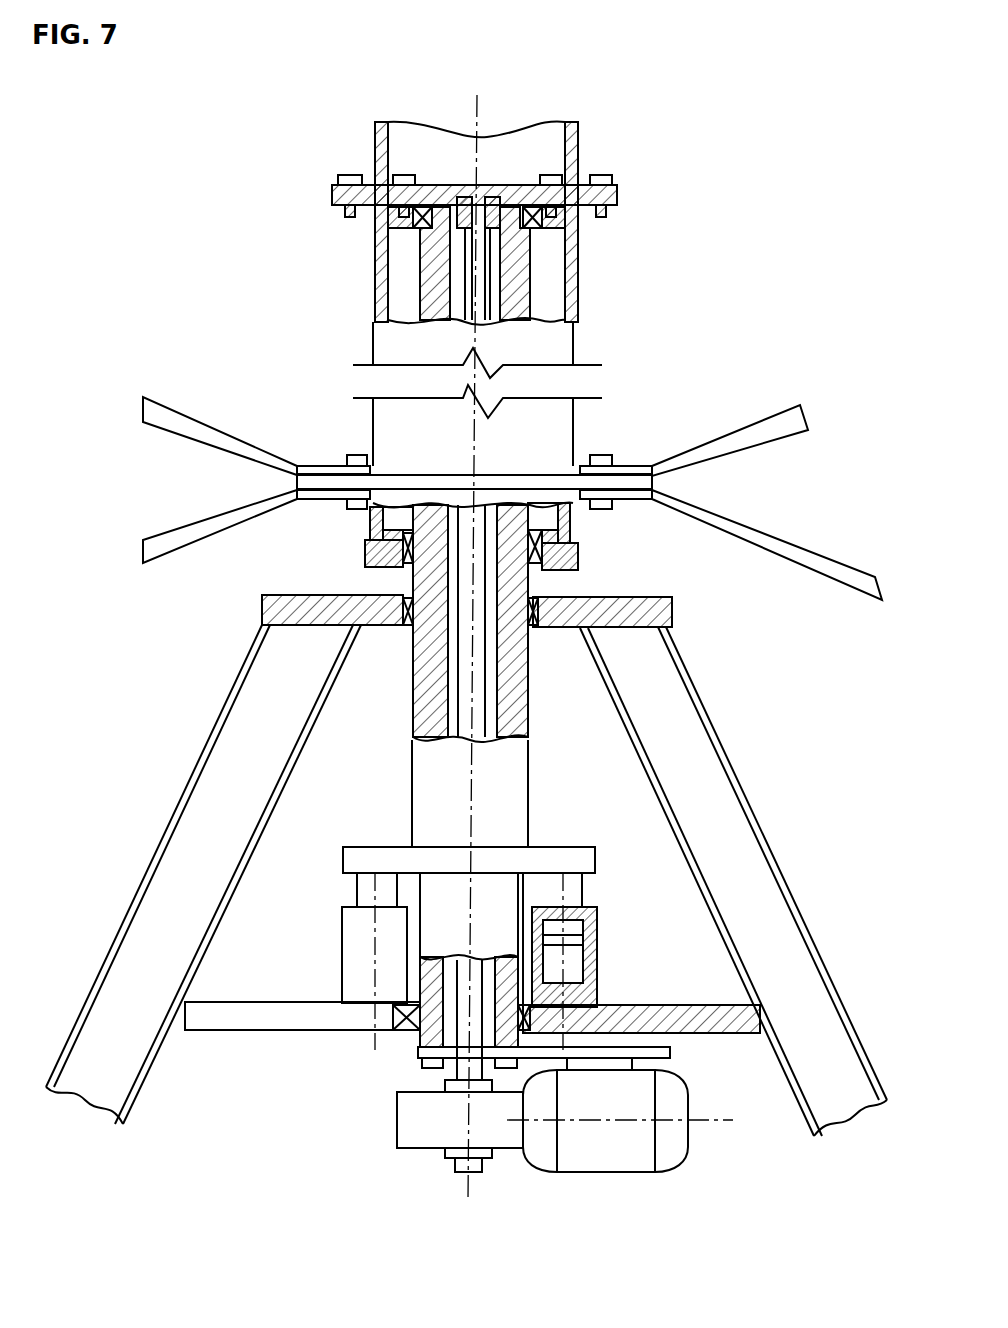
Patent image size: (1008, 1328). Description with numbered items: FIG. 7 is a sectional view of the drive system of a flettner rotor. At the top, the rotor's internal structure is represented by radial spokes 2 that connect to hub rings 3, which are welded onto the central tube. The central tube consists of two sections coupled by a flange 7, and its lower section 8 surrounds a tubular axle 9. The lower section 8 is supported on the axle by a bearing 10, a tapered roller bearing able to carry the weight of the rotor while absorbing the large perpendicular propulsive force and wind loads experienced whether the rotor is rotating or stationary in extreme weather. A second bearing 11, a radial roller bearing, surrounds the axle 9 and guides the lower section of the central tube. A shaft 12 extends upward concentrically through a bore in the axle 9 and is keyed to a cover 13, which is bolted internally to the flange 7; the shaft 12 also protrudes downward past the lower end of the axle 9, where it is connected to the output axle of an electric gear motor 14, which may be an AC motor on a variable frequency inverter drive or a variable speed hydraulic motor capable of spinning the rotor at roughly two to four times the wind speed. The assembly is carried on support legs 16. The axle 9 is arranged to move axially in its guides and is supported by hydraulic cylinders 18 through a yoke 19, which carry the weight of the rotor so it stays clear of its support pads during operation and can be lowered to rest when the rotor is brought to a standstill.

The spokes 2 is at (770, 427).
The hub rings 3 is at (297, 485).
The flange 7 is at (617, 192).
The lower section 8 is at (575, 437).
The tubular axle 9 is at (517, 284).
The bearing 10 is at (417, 210).
The second bearing 11 is at (540, 572).
The shaft 12 is at (470, 283).
The cover 13 is at (518, 192).
The electric gear motor 14 is at (627, 1155).
The support legs 16 is at (217, 773).
The hydraulic cylinders 18 is at (342, 943).
The yoke 19 is at (537, 860).